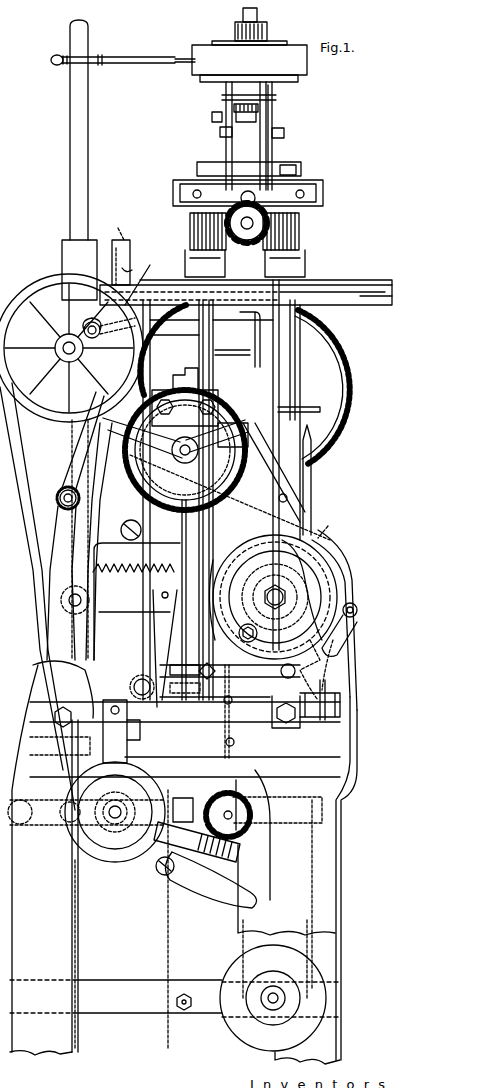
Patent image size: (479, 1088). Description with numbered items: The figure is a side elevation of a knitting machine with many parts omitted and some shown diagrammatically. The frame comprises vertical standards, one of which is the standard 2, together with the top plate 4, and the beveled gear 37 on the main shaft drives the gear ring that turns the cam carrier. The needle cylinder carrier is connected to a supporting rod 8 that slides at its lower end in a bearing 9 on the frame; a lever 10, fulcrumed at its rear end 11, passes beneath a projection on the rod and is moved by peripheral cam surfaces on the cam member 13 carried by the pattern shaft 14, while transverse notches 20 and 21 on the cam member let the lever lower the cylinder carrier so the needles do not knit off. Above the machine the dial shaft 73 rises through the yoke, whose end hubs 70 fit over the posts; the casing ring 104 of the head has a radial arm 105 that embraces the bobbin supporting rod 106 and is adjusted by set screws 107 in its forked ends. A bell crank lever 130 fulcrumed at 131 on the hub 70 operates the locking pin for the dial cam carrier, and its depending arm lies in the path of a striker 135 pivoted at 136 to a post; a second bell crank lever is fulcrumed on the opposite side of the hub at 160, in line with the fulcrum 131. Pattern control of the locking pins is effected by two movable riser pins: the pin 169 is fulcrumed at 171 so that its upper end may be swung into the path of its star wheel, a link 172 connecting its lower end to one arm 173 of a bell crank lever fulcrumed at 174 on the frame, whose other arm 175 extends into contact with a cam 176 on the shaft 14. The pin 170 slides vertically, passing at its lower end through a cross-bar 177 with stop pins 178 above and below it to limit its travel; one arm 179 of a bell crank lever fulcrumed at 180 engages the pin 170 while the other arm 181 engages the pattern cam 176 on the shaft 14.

The vertical standard 2 is at (340, 866).
The top plate 4 is at (356, 284).
The supporting rod 8 is at (192, 622).
The bearing 9 is at (146, 684).
The lever 10 is at (238, 532).
The rear end of lever 11 is at (128, 540).
The cam member 13 is at (313, 640).
The pattern shaft 14 is at (278, 597).
The notch 20 is at (338, 548).
The notch 21 is at (312, 657).
The beveled gear 37 is at (352, 378).
The end hub 70 is at (254, 136).
The dial shaft 73 is at (258, 12).
The casing ring 104 is at (306, 66).
The arm 105 is at (146, 57).
The bobbin supporting rod 106 is at (85, 126).
The set screws 107 is at (56, 56).
The bell crank lever 130 is at (272, 150).
The fulcrum 131 is at (284, 132).
The striker 135 is at (265, 196).
The pivot 136 is at (300, 236).
The fulcrum 160 is at (220, 132).
The movable pin 169 is at (126, 250).
The movable pin 170 is at (205, 233).
The fulcrum 171 is at (132, 270).
The link 172 is at (66, 292).
The arm of bell crank lever 173 is at (84, 330).
The fulcrum 174 is at (58, 490).
The arm of bell crank lever 175 is at (122, 478).
The cam 176 is at (322, 536).
The cross-bar 177 is at (190, 718).
The stop pins 178 is at (232, 698).
The arm of bell crank lever 179 is at (300, 668).
The fulcrum 180 is at (296, 672).
The arm of bell crank lever 181 is at (323, 640).